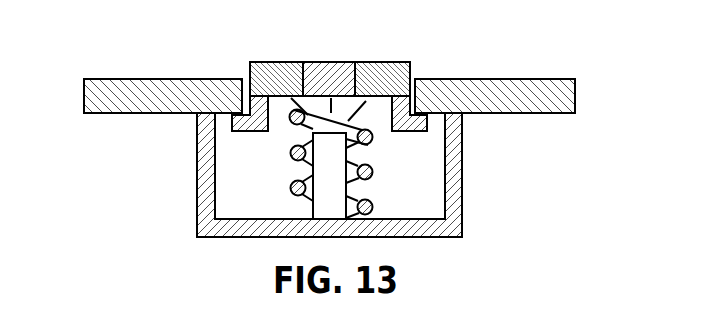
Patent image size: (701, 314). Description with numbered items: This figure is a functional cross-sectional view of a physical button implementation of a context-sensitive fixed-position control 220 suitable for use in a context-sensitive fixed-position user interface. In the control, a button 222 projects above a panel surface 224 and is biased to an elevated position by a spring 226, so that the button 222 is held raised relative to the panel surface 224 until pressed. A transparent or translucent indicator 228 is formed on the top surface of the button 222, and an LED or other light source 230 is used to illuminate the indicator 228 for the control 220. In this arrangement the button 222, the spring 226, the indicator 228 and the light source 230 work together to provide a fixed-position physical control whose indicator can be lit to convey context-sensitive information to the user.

The context-sensitive fixed-position control 220 is at (74, 70).
The button 222 is at (268, 61).
The panel surface 224 is at (578, 88).
The spring 226 is at (291, 197).
The indicator 228 is at (353, 61).
The light source 230 is at (338, 183).